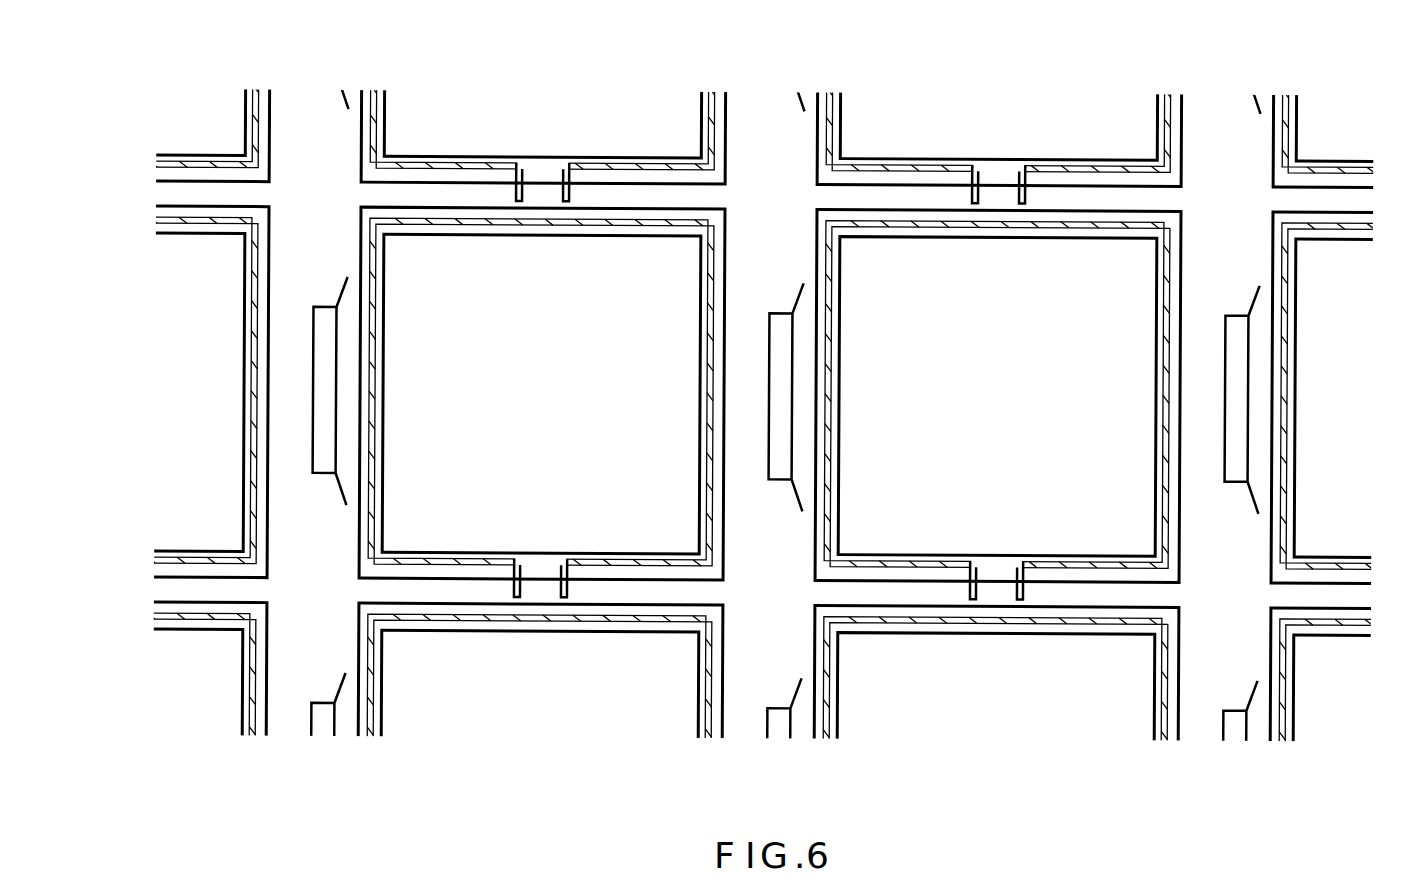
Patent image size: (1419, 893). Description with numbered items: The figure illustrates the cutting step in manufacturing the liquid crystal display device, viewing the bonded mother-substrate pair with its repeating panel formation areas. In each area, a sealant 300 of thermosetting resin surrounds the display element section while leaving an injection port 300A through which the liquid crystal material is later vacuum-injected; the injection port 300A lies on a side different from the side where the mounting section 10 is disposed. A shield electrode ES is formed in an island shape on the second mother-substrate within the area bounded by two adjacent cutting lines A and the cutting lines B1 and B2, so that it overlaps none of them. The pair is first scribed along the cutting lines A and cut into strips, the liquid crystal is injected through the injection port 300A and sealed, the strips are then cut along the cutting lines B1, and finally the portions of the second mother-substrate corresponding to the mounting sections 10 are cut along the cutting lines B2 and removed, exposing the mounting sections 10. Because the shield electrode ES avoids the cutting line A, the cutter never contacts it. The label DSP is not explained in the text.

The sealant 300 is at (372, 118).
The injection port 300A is at (772, 357).
The mounting section 10 is at (323, 309).
The display portion DSP is at (372, 150).
The shield electrode ES is at (725, 151).
The cutting line A is at (1385, 593).
The cutting line B1 is at (1193, 770).
The cutting line B2 is at (1258, 770).